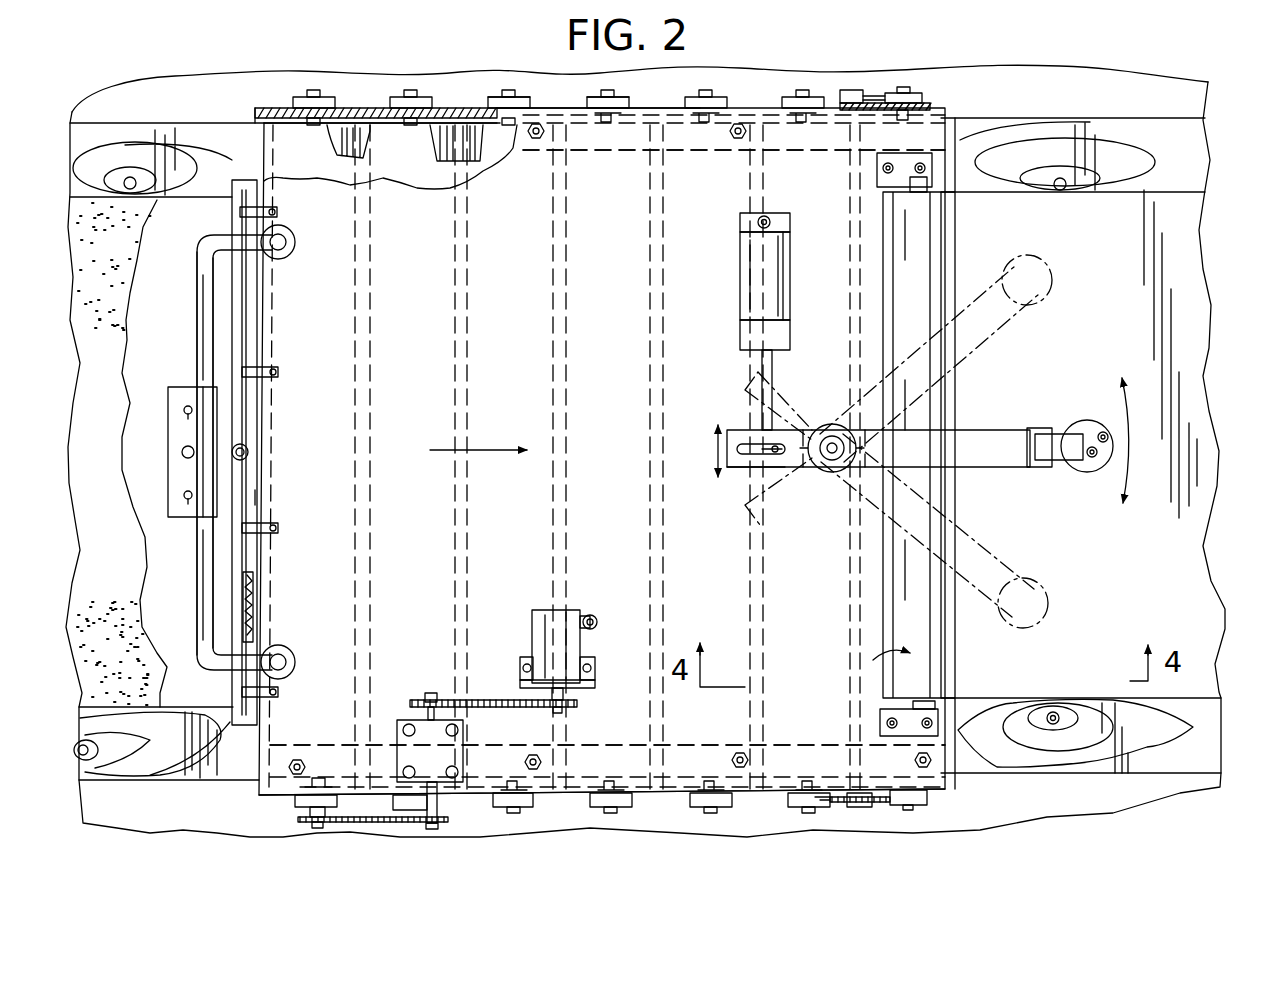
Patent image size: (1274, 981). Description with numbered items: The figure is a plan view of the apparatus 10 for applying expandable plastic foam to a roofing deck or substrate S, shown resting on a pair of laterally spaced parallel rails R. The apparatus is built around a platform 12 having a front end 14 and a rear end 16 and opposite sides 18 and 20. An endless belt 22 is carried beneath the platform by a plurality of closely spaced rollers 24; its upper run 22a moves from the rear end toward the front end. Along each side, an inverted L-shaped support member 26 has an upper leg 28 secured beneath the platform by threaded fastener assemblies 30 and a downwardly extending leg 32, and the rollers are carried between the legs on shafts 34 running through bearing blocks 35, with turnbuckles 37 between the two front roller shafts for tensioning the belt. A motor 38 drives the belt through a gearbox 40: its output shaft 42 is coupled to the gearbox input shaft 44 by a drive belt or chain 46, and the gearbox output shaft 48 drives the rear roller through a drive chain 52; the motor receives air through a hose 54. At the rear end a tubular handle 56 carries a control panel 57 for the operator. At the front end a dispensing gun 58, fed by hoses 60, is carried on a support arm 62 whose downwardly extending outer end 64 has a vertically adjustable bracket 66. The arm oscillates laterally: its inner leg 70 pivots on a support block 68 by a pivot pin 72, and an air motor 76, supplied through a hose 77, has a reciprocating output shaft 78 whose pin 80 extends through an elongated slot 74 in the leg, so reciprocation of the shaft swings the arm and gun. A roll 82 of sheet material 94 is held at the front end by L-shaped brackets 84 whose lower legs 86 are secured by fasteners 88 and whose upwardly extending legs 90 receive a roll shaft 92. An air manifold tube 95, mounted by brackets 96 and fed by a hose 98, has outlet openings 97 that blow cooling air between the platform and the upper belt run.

The apparatus 10 is at (765, 72).
The platform 12 is at (628, 160).
The front end 14 is at (875, 275).
The rear end 16 is at (243, 548).
The side 18 is at (553, 125).
The side 20 is at (643, 793).
The endless belt 22 is at (432, 128).
The upper run 22a is at (398, 185).
The rollers 24 is at (383, 130).
The inverted L-shaped support members 26 is at (260, 118).
The upper legs 28 is at (600, 148).
The threaded fastener assemblies 30 is at (737, 135).
The legs 32 is at (283, 110).
The shafts 34 is at (313, 92).
The bearing blocks 35 is at (420, 103).
The turnbuckles 37 is at (853, 98).
The motor 38 is at (540, 606).
The gearbox 40 is at (397, 745).
The output shaft 42 is at (562, 690).
The input shaft 44 is at (430, 693).
The drive belt or chain 46 is at (493, 698).
The output shaft 48 is at (437, 826).
The drive chain 52 is at (378, 822).
The hose 54 is at (591, 614).
The tubular handle 56 is at (198, 338).
The control panel 57 is at (170, 420).
The dispensing gun 58 is at (1055, 272).
The hoses 60 is at (1103, 431).
The support arm 62 is at (972, 428).
The outer end 64 is at (1053, 460).
The vertically adjustable bracket 66 is at (1035, 430).
The support block 68 is at (840, 470).
The inner leg 70 is at (738, 468).
The pivot pin 72 is at (832, 440).
The elongated slot 74 is at (745, 446).
The air motor 76 is at (745, 295).
The hose 77 is at (767, 220).
The reciprocating output shaft 78 is at (762, 365).
The pin 80 is at (770, 456).
The roll 82 is at (932, 628).
The L-shaped brackets 84 is at (875, 188).
The lower legs 86 is at (925, 173).
The fasteners 88 is at (928, 160).
The upwardly extending legs 90 is at (925, 185).
The roll shaft 92 is at (905, 655).
The sheet material 94 is at (160, 262).
The air manifold tube 95 is at (258, 497).
The brackets 96 is at (258, 370).
The outlet openings 97 is at (252, 622).
The hose 98 is at (248, 450).
The rails R is at (1185, 155).
The substrate S is at (1201, 579).